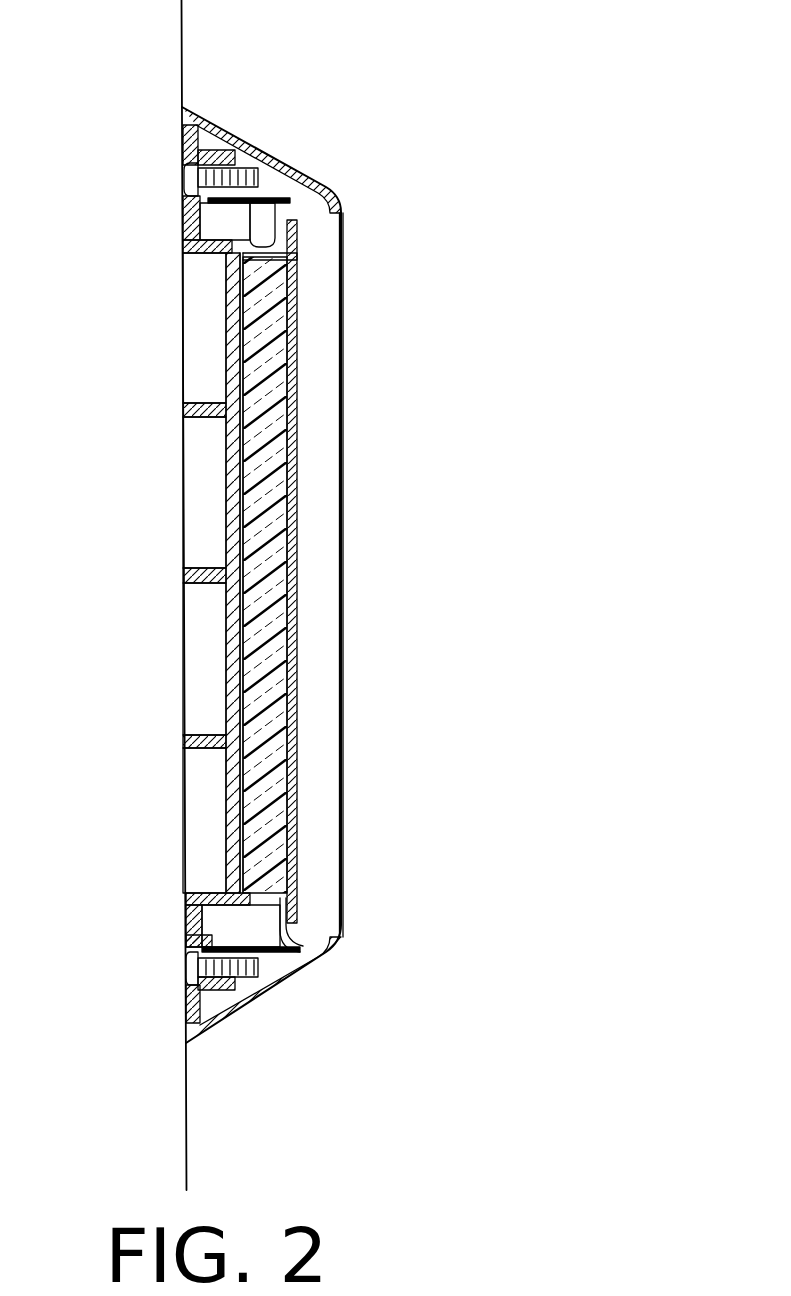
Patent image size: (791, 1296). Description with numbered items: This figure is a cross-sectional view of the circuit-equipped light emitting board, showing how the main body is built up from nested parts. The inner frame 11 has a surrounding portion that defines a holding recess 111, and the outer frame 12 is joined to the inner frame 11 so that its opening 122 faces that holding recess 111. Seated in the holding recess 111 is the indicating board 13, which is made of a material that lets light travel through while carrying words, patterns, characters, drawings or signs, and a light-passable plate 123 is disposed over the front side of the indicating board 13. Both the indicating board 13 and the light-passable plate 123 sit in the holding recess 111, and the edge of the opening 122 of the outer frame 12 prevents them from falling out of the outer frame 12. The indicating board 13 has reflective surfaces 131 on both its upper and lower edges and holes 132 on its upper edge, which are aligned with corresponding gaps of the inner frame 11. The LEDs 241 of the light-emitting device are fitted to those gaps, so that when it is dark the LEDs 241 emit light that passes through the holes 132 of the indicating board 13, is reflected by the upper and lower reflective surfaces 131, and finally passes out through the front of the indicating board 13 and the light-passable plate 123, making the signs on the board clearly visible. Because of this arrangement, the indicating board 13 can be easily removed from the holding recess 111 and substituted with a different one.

The inner frame 11 is at (187, 240).
The holding recess 111 is at (258, 820).
The outer frame 12 is at (340, 205).
The opening 122 is at (320, 511).
The light-passable plate 123 is at (297, 642).
The indicating board 13 is at (268, 748).
The reflective surface 131 is at (325, 965).
The hole 132 is at (255, 257).
The LED 241 is at (268, 222).